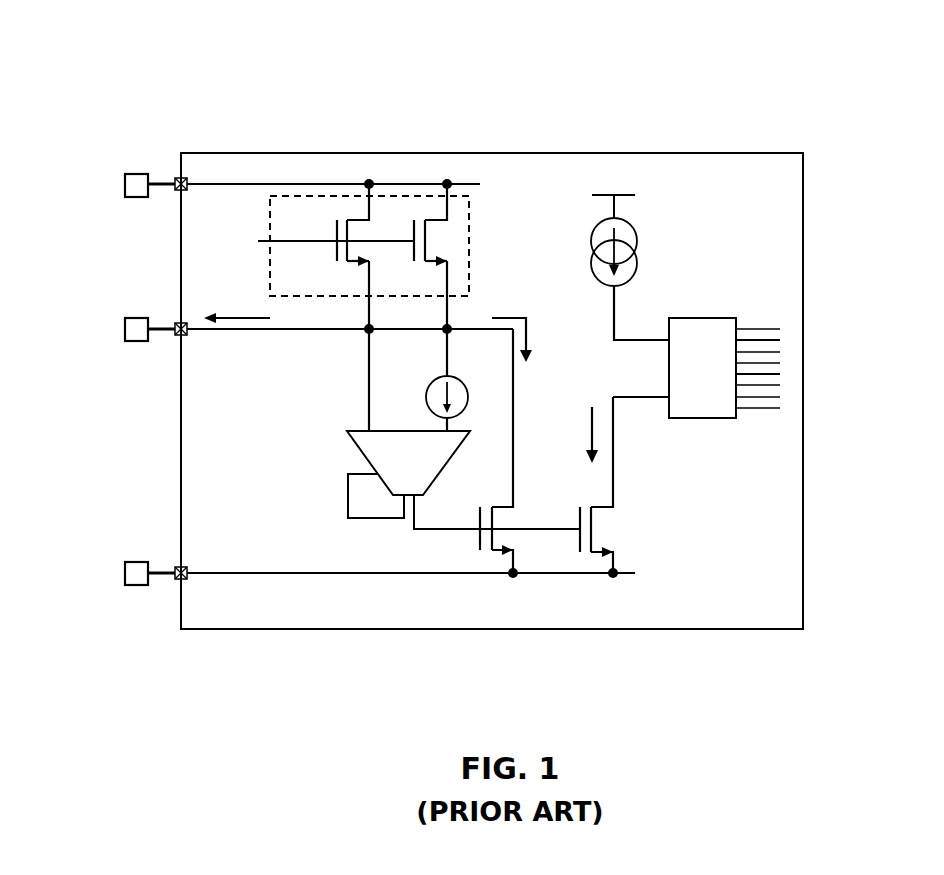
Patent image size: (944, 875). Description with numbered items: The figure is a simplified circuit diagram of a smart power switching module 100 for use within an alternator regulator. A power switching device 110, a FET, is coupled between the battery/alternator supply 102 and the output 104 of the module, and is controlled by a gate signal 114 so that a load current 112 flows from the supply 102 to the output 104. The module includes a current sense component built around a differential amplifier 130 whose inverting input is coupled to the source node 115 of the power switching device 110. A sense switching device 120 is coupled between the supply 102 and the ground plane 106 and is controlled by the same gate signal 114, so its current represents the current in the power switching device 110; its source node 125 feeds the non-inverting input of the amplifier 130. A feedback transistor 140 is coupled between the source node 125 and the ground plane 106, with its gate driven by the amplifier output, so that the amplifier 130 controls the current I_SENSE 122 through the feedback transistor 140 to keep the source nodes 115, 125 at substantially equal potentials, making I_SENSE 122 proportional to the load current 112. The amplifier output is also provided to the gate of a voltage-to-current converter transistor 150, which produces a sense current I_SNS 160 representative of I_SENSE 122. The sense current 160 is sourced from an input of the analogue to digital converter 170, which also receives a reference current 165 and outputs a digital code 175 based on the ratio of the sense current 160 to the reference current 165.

The smart power switching module 100 is at (526, 80).
The battery/alternator supply 102 is at (125, 178).
The output 104 is at (125, 322).
The ground plane 106 is at (125, 566).
The power switching device 110 is at (325, 231).
The load current 112 is at (227, 300).
The gate signal 114 is at (227, 232).
The source node of the power switching device 115 is at (358, 298).
The sense switching device 120 is at (403, 231).
The current I_SENSE 122 is at (505, 300).
The source node of the sense switching device 125 is at (437, 298).
The differential amplifier 130 is at (360, 450).
The feedback transistor 140 is at (470, 518).
The voltage-to-current converter transistor 150 is at (568, 518).
The sense current I_SNS 160 is at (580, 440).
The reference current 165 is at (637, 243).
The analogue to digital converter 170 is at (690, 318).
The digital code 175 is at (746, 420).